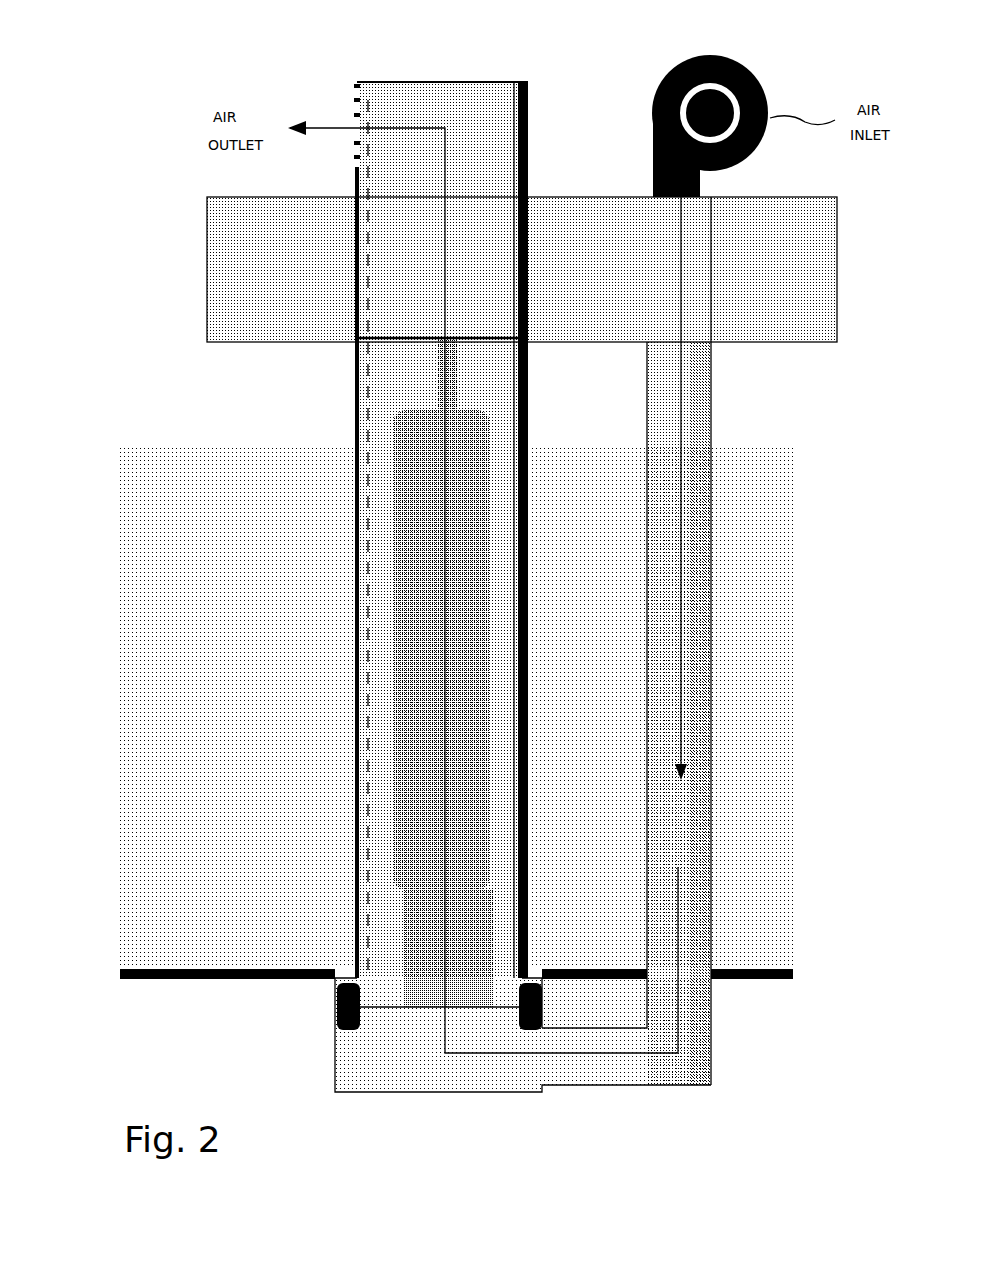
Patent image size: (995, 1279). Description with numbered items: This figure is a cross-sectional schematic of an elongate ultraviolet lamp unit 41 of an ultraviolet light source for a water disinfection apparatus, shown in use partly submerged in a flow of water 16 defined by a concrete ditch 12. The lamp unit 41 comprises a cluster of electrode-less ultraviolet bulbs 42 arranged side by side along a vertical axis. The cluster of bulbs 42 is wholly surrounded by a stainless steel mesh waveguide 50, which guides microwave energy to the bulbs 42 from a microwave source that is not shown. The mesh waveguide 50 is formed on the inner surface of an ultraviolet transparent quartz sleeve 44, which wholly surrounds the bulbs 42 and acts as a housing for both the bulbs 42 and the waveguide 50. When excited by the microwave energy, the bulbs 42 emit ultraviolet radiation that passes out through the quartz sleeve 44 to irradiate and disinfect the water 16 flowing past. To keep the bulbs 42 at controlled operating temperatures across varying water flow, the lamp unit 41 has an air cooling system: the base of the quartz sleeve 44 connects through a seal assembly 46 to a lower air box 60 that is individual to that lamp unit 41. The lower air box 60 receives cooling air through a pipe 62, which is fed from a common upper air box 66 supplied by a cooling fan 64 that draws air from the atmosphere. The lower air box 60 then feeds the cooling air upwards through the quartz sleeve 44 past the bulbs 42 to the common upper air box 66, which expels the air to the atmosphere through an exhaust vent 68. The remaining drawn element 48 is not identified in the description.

The concrete ditch 12 is at (765, 982).
The flow of water 16 is at (762, 615).
The elongate ultraviolet lamp unit 41 is at (315, 573).
The electrode-less ultraviolet bulbs 42 is at (390, 757).
The ultraviolet transparent quartz sleeve 44 is at (360, 670).
The seal assembly 46 is at (330, 993).
The heating element 48 is at (397, 495).
The stainless steel mesh waveguide 50 is at (505, 612).
The lower air box 60 is at (333, 1068).
The pipe 62 is at (712, 788).
The cooling fan 64 is at (750, 72).
The common upper air box 66 is at (220, 265).
The exhaust vent 68 is at (355, 90).